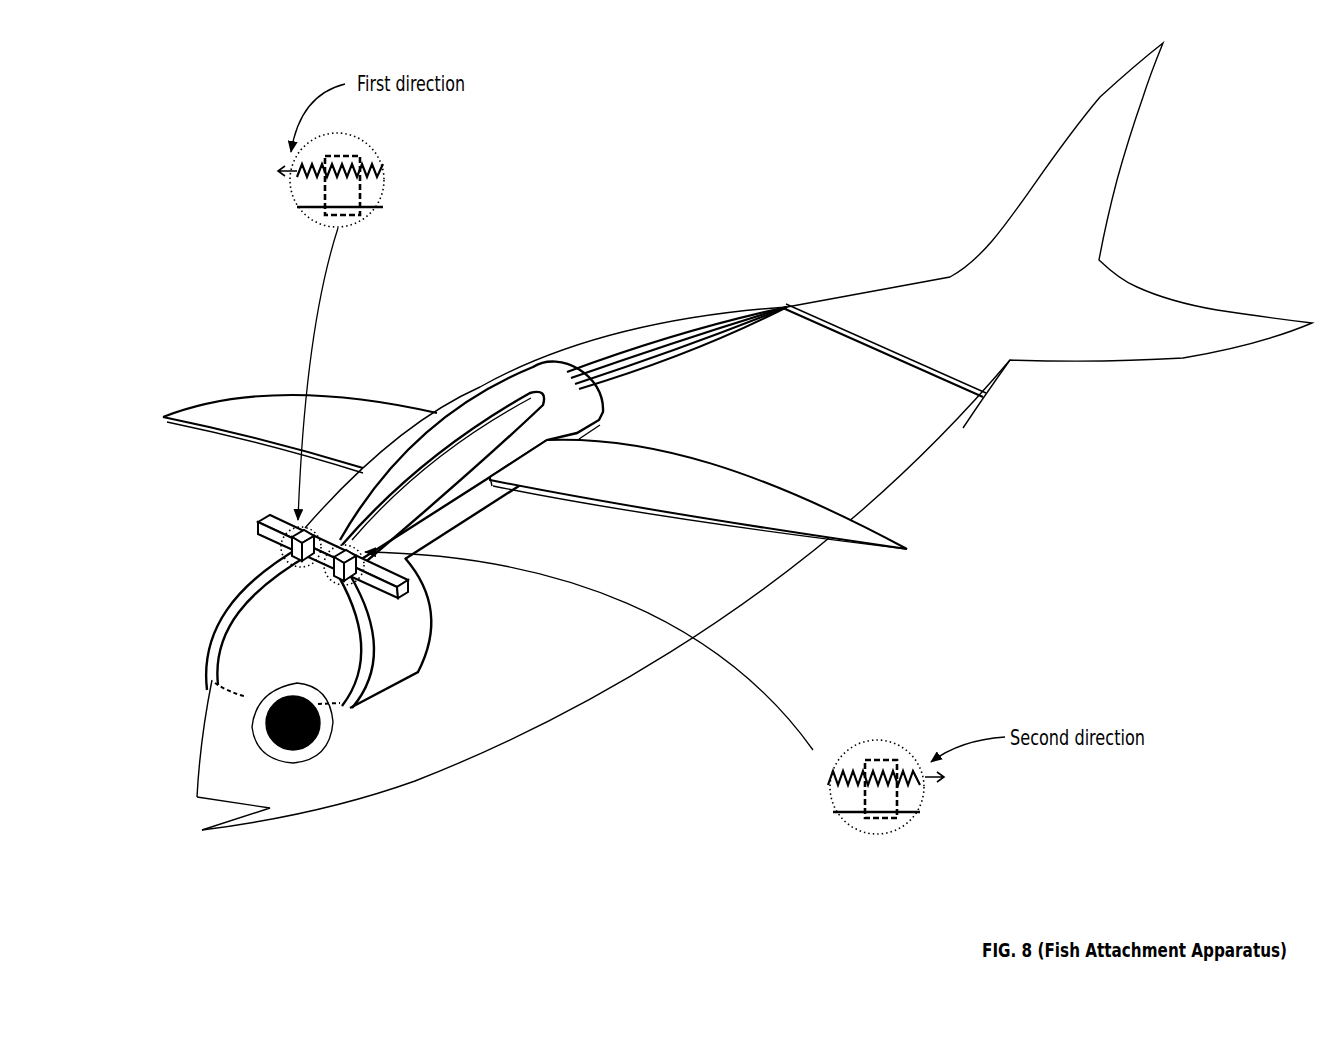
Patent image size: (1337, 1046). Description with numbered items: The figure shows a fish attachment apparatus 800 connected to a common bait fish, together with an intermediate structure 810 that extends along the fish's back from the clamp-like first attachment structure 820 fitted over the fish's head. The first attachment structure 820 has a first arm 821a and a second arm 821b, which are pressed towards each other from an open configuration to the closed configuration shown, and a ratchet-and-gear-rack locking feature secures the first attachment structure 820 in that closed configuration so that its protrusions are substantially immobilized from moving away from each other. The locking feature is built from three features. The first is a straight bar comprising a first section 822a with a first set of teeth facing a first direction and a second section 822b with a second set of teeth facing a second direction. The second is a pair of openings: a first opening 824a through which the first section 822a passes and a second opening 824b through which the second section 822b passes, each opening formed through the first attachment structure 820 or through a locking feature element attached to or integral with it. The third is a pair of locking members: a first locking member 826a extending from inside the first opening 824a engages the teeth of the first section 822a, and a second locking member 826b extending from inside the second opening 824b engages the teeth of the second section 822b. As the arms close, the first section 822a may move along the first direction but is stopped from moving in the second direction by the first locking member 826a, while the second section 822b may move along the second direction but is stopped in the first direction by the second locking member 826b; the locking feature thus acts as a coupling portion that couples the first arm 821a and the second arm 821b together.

The fish attachment apparatus 800 is at (218, 124).
The intermediate structure 810 is at (507, 368).
The first attachment structure 820 is at (423, 693).
The first arm 821a is at (217, 620).
The second arm 821b is at (393, 666).
The first section 822a is at (370, 193).
The second section 822b is at (908, 797).
The first opening 824a is at (352, 212).
The second opening 824b is at (890, 818).
The first locking member 826a is at (344, 162).
The second locking member 826b is at (882, 765).